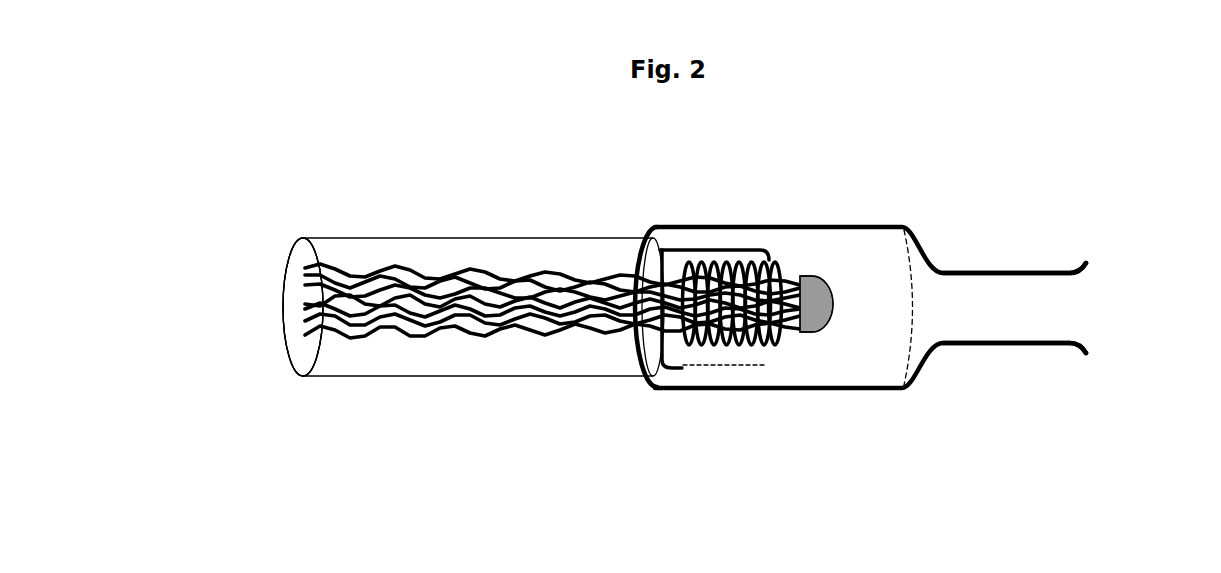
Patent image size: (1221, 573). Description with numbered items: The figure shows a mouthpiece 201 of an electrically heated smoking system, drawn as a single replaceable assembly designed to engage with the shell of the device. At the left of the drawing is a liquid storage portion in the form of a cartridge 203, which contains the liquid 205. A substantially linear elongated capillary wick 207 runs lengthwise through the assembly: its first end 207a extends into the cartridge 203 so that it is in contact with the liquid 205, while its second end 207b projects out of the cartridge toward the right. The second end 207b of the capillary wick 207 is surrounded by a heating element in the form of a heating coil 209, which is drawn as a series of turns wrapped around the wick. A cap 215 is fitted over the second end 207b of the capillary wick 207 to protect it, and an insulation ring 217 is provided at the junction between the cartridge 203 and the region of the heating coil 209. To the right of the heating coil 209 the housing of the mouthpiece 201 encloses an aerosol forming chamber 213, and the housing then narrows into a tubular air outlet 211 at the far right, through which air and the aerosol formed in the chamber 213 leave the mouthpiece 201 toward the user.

The mouthpiece 201 is at (1097, 123).
The cartridge 203 is at (455, 377).
The liquid 205 is at (340, 365).
The capillary wick 207 is at (478, 287).
The first end of the capillary wick 207a is at (312, 285).
The second end of the capillary wick 207b is at (800, 278).
The heating coil 209 is at (740, 345).
The air outlet 211 is at (1085, 320).
The aerosol forming chamber 213 is at (878, 308).
The cap 215 is at (822, 297).
The insulation ring 217 is at (640, 387).